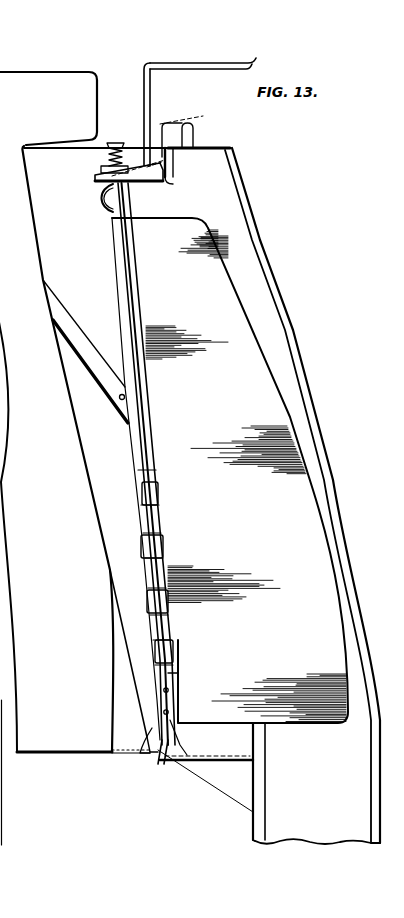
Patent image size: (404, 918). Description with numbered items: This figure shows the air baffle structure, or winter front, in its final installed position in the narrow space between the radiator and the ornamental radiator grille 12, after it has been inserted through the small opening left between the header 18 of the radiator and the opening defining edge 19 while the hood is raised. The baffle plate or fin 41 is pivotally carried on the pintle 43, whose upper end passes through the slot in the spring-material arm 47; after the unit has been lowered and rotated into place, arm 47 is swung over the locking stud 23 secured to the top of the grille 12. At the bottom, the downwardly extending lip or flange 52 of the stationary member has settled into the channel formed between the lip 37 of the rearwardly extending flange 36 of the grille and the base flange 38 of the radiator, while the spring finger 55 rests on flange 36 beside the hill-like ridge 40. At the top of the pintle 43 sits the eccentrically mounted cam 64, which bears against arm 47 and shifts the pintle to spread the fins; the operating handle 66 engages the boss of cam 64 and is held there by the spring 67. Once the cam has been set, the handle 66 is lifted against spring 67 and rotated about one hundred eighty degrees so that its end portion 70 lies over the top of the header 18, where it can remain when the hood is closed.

The ornamental radiator grille 12 is at (262, 232).
The header 18 is at (52, 53).
The opening defining edge 19 is at (175, 167).
The locking stud 23 is at (196, 134).
The rearwardly extending flange 36 is at (243, 801).
The lip 37 is at (160, 765).
The base flange 38 is at (148, 757).
The hill-like ridge 40 is at (213, 762).
The baffle plate or fin 41 is at (237, 312).
The pintle 43 is at (132, 198).
The arm 47 is at (174, 182).
The downwardly extending lip or flange 52 is at (145, 732).
The spring finger 55 is at (168, 750).
The cam 64 is at (94, 176).
The operating handle 66 is at (151, 97).
The spring 67 is at (123, 142).
The end portion of handle 70 is at (228, 64).